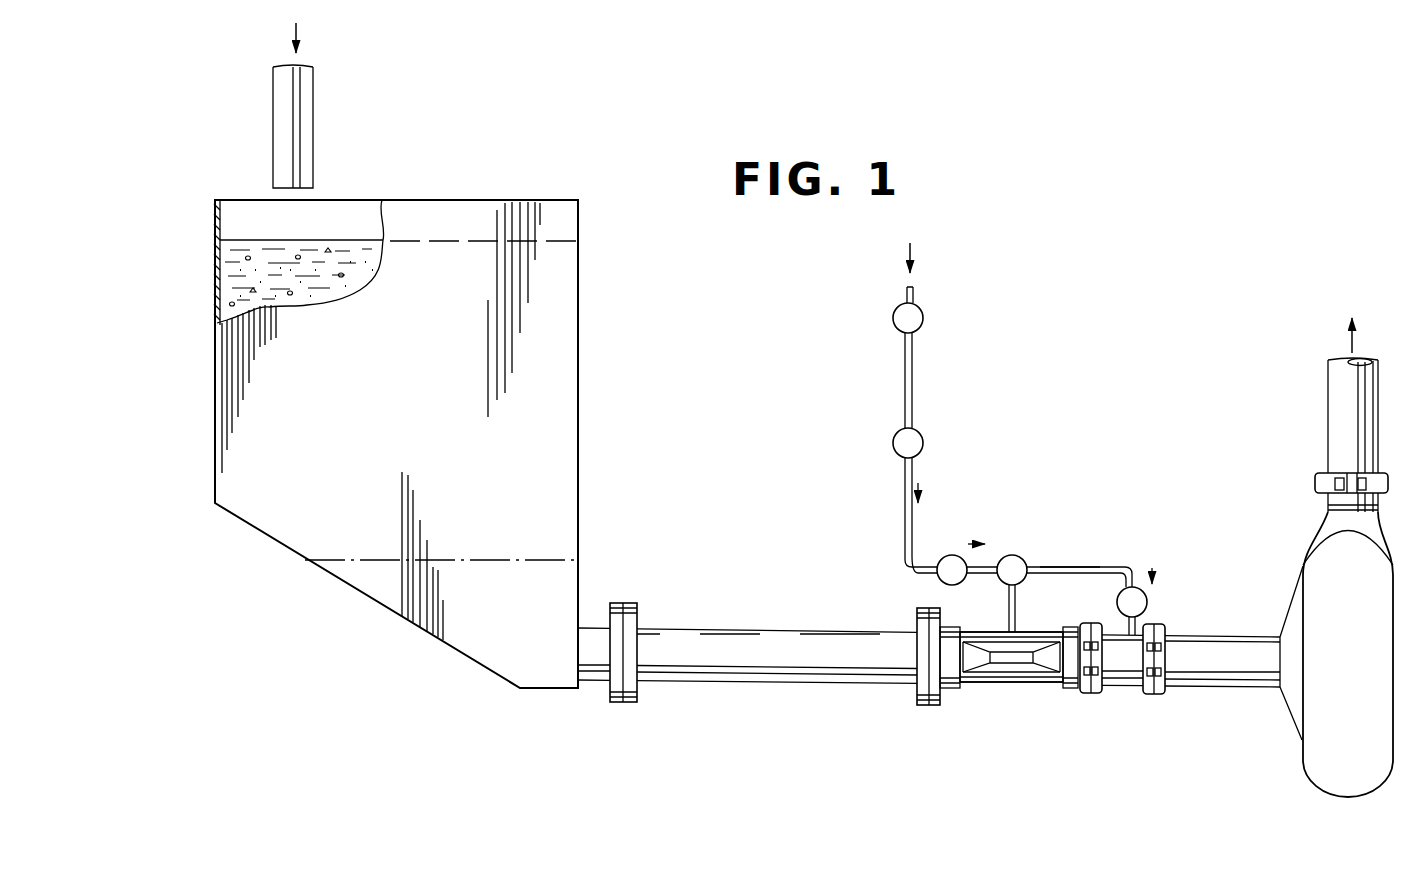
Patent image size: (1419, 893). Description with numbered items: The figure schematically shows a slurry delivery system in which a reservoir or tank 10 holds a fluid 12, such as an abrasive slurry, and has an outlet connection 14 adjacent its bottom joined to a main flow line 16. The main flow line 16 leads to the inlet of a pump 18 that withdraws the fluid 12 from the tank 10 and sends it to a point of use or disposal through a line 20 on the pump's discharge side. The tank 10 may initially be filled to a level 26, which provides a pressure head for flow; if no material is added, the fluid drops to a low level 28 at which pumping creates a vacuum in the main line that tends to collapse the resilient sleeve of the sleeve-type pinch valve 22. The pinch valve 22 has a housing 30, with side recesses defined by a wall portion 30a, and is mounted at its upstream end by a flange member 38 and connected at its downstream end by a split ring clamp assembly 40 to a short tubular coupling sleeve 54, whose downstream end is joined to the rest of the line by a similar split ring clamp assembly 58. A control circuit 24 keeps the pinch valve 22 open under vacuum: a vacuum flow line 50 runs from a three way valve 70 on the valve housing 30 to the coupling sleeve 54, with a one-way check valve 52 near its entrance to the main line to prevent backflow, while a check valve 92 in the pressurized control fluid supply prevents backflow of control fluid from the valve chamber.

The tank 10 is at (578, 275).
The fluid 12 is at (307, 240).
The outlet connection 14 is at (577, 626).
The main flow line 16 is at (903, 757).
The pump 18 is at (1280, 752).
The line 20 is at (1339, 398).
The pinch valve 22 is at (1052, 692).
The control circuit 24 is at (1122, 525).
The level 26 is at (553, 245).
The low level 28 is at (525, 560).
The housing 30 is at (1009, 693).
The wall portion 30a is at (1010, 660).
The flange member 38 is at (928, 705).
The split ring clamp assembly 40 is at (1094, 698).
The vacuum flow line 50 is at (1069, 564).
The check valve 52 is at (1152, 600).
The coupling sleeve 54 is at (1120, 686).
The split ring clamp assembly 58 is at (1167, 692).
The three way valve 70 is at (1017, 552).
The check valve 92 is at (933, 580).